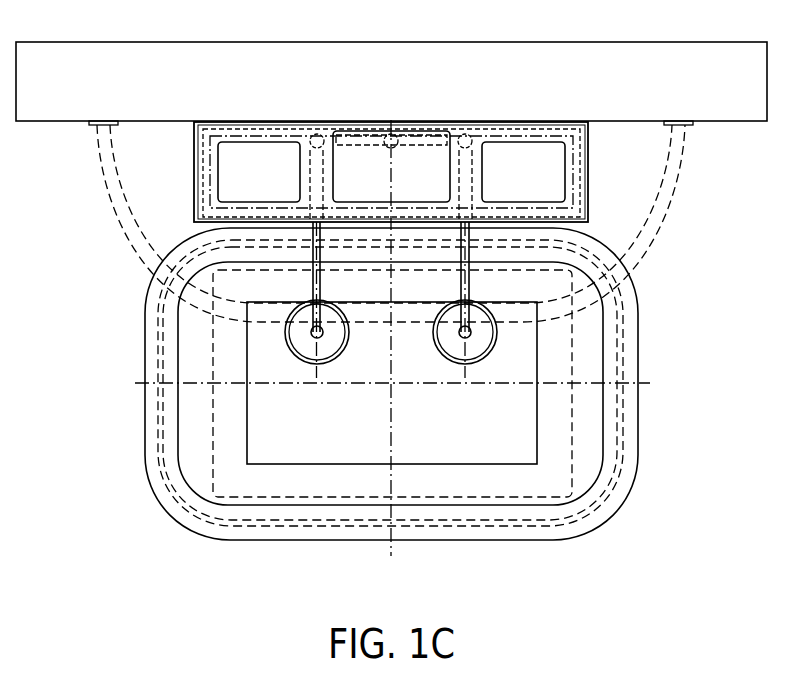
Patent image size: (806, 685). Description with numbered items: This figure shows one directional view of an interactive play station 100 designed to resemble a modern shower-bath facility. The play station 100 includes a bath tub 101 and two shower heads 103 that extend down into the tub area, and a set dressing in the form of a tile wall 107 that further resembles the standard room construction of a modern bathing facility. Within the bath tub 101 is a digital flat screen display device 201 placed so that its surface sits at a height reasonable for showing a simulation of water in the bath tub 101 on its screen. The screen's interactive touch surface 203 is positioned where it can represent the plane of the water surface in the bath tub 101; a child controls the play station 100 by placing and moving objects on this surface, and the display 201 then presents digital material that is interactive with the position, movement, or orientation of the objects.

The interactive play station 100 is at (80, 259).
The bath tub 101 is at (238, 533).
The shower heads 103 is at (308, 340).
The tile wall 107 is at (282, 43).
The digital flat screen display device 201 is at (540, 463).
The interactive touch surface 203 is at (468, 448).